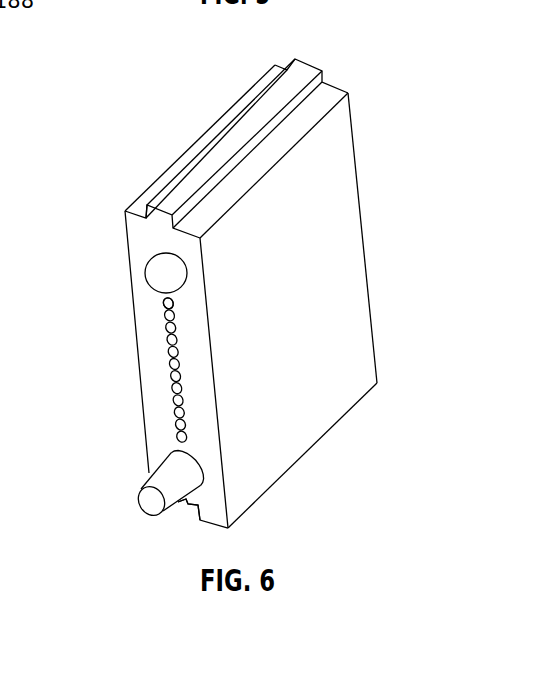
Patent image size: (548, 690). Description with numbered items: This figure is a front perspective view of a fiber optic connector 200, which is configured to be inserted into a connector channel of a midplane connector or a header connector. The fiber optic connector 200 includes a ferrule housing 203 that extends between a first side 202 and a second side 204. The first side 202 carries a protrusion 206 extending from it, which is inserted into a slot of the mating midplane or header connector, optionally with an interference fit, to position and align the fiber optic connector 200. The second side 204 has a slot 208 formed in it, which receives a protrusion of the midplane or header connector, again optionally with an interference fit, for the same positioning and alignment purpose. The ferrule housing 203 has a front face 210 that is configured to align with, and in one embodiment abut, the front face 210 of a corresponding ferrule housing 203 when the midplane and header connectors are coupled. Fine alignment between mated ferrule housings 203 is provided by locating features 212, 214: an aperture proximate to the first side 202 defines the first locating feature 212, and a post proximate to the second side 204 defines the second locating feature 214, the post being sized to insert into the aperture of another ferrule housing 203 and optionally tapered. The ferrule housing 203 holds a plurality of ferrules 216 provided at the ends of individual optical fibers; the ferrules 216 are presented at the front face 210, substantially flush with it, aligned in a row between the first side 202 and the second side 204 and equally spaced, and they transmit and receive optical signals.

The fiber optic connector 200 is at (250, 287).
The first side 202 is at (232, 148).
The ferrule housing 203 is at (326, 319).
The second side 204 is at (272, 508).
The protrusion 206 is at (167, 193).
The slot 208 is at (188, 508).
The front face 210 is at (157, 353).
The first locating feature 212 is at (145, 263).
The second locating feature 214 is at (138, 492).
The ferrules 216 is at (164, 311).